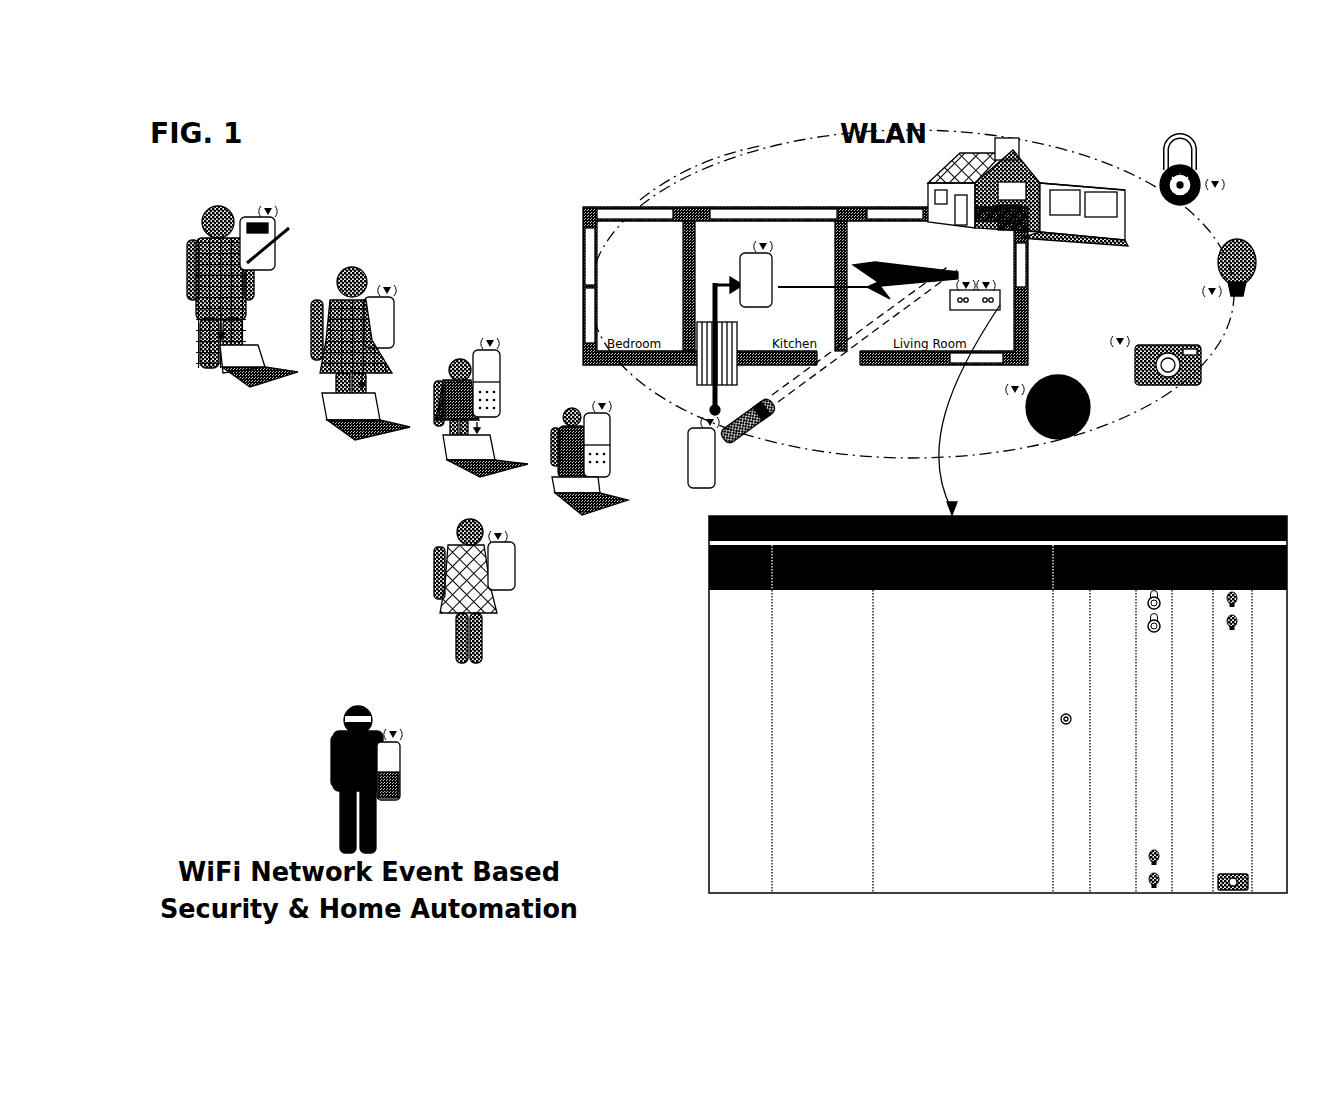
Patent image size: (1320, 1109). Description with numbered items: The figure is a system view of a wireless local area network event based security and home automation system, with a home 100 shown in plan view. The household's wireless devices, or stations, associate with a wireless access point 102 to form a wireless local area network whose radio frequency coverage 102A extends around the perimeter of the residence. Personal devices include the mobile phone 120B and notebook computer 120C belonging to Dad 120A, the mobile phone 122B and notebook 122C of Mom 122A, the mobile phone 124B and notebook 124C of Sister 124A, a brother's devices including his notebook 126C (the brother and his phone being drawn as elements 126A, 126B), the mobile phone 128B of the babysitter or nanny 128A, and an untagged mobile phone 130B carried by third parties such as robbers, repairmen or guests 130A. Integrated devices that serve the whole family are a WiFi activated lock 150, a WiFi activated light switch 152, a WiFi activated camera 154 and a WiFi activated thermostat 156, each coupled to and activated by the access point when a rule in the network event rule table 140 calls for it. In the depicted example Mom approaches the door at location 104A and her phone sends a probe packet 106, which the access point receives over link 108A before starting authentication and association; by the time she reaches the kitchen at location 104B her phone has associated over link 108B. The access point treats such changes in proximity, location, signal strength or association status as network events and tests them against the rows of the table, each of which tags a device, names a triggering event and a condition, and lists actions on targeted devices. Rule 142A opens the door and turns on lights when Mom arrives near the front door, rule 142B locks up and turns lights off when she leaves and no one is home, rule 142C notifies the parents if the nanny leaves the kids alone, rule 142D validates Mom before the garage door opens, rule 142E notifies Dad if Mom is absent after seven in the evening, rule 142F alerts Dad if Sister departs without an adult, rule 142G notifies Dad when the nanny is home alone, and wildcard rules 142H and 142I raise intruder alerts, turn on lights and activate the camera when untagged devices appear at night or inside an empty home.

The home 100 is at (945, 188).
The wireless access point 102 is at (1018, 292).
The radio frequency coverage 102A is at (655, 192).
The location at the door 104A is at (710, 410).
The location in the kitchen 104B is at (713, 284).
The probe packet 106 is at (765, 418).
The link 108A is at (818, 386).
The link 108B is at (875, 265).
The Dad 120A is at (198, 236).
The personal mobile phone 120B is at (257, 217).
The notebook computer 120C is at (245, 380).
The Mom 122A is at (328, 305).
The mobile phone 122B is at (740, 256).
The notebook 122C is at (324, 406).
The Sister 124A is at (441, 381).
The mobile phone 124B is at (500, 352).
The notebook 124C is at (446, 450).
The Bro user 126A is at (557, 431).
The Bro mobile device 126B is at (609, 420).
The notebook 126C is at (554, 487).
The babysitter/nanny 128A is at (443, 567).
The mobile phone 128B is at (517, 553).
The third parties 130A is at (333, 765).
The mobile phone 130B is at (401, 737).
The table 140 is at (793, 516).
The network event rule 142A is at (709, 602).
The network event rule 142B is at (709, 625).
The network event rule 142C is at (709, 672).
The network event rule 142D is at (709, 719).
The network event rule 142E is at (709, 742).
The network event rule 142F is at (709, 789).
The network event rule 142G is at (709, 812).
The network event rule 142H is at (709, 859).
The network event rule 142I is at (709, 882).
The WiFi activated lock 150 is at (1160, 178).
The WiFi activated light switch 152 is at (1248, 250).
The WiFi activated camera 154 is at (1200, 382).
The WiFi activated thermostat 156 is at (1088, 428).